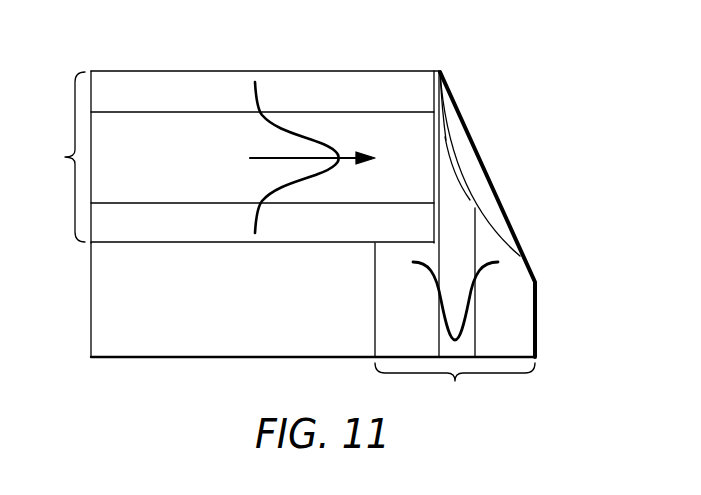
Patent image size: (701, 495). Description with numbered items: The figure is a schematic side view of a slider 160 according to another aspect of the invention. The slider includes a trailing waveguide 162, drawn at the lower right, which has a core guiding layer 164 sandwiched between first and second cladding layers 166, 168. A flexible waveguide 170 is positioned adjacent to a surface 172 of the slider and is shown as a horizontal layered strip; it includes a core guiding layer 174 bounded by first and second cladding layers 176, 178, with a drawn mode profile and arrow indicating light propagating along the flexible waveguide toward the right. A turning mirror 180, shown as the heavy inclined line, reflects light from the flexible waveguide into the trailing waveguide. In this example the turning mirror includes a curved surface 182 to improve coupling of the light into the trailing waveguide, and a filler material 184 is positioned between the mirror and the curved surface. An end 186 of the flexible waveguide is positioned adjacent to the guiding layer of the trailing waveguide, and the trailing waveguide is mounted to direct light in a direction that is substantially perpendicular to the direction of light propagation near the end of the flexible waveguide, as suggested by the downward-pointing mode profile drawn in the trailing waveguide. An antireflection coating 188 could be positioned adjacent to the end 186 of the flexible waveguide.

The slider 160 is at (105, 335).
The trailing waveguide 162 is at (455, 311).
The core guiding layer 164 is at (470, 345).
The first cladding layer 166 is at (523, 315).
The second cladding layer 168 is at (385, 325).
The flexible waveguide 170 is at (65, 157).
The surface 172 is at (128, 243).
The core guiding layer 174 is at (193, 133).
The first cladding layer 176 is at (138, 83).
The second cladding layer 178 is at (112, 228).
The turning mirror 180 is at (500, 201).
The curved surface 182 is at (470, 183).
The filler material 184 is at (470, 160).
The end 186 is at (434, 155).
The antireflection coating 188 is at (443, 137).